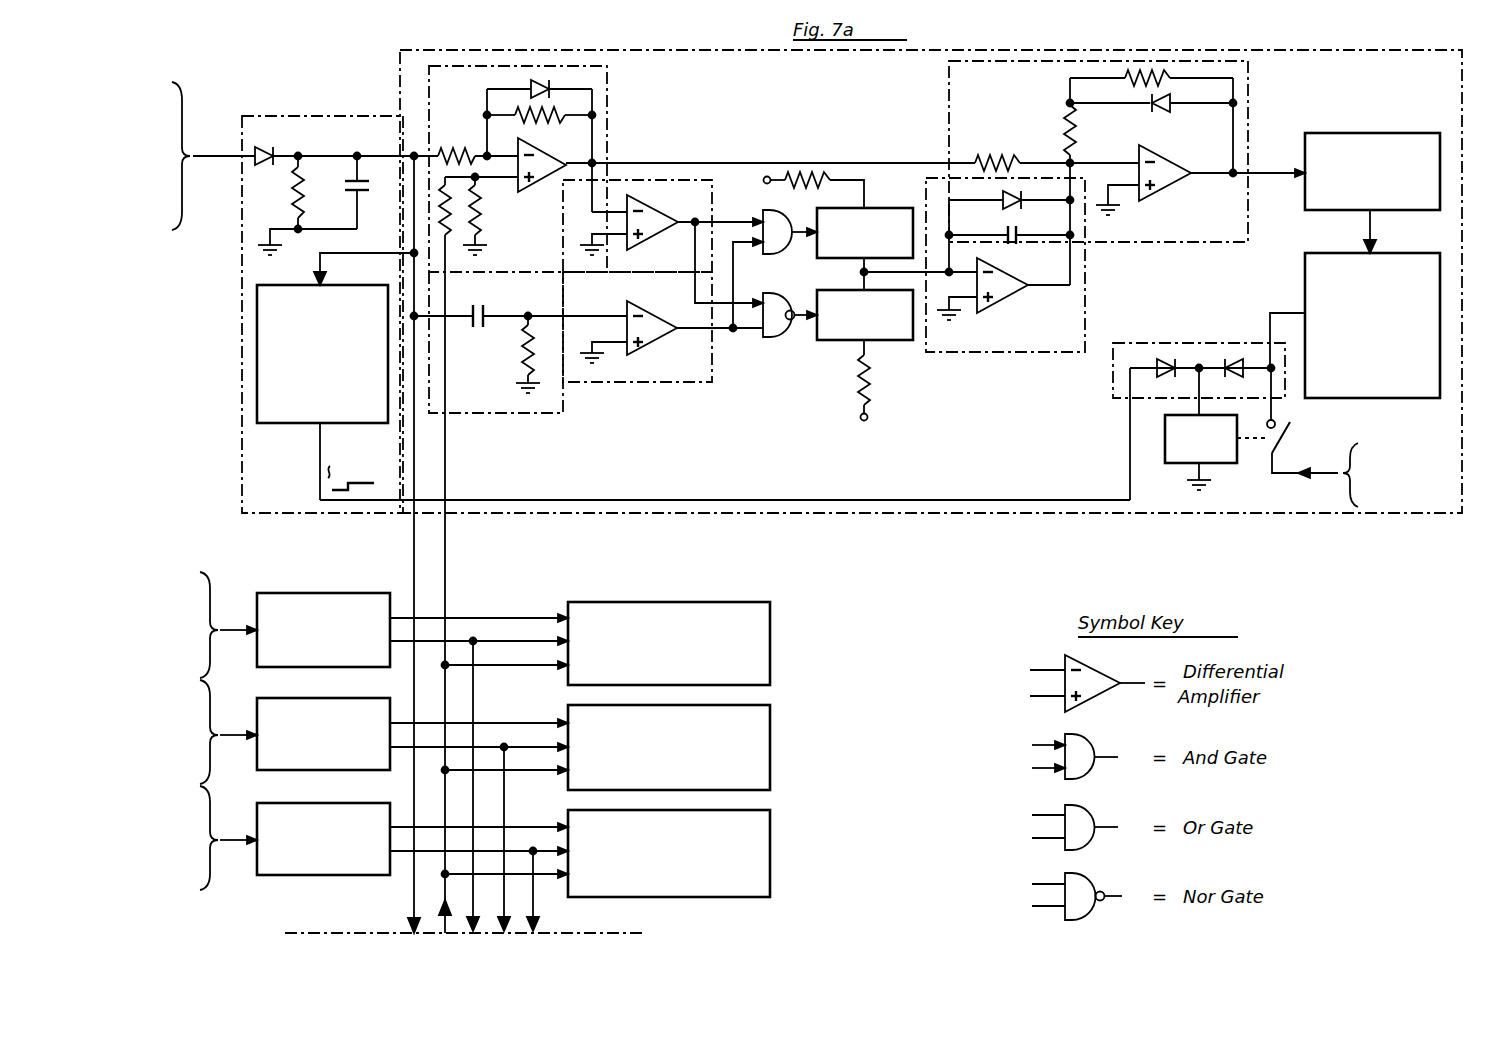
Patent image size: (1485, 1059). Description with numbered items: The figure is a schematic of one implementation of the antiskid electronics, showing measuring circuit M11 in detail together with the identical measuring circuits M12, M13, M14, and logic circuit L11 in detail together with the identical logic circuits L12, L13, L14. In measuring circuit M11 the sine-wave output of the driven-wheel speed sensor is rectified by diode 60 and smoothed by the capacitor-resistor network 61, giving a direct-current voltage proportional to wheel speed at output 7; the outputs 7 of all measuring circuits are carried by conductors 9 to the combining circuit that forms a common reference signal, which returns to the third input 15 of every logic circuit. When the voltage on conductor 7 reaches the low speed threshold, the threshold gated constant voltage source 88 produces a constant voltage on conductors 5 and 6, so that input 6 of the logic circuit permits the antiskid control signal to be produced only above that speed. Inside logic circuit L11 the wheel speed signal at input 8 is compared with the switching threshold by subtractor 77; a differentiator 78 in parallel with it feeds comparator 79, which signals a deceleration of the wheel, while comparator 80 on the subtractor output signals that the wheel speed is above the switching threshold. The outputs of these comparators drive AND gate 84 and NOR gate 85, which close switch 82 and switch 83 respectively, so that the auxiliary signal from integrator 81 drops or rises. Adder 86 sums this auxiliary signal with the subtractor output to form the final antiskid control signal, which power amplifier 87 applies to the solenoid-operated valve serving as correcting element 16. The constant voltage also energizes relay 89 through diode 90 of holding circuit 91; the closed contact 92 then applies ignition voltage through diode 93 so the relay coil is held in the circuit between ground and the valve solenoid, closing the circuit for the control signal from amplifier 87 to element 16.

The output of measuring circuit 5 is at (395, 508).
The input of logic circuit 6 is at (512, 616).
The output of measuring circuit 7 is at (410, 154).
The input of logic circuit 8 is at (504, 643).
The conductors 9 is at (502, 910).
The third input of logic circuit 15 is at (446, 522).
The correcting element 16 is at (1307, 253).
The diode 60 is at (262, 148).
The capacitor-resistor network 61 is at (290, 186).
The subtractor 77 is at (625, 90).
The differentiator 78 is at (498, 400).
The comparator 79 is at (704, 357).
The comparator 80 is at (706, 196).
The integrator 81 is at (1084, 322).
The switch 82 is at (888, 208).
The switch 83 is at (820, 345).
The AND gate 84 is at (772, 222).
The NOR gate 85 is at (772, 300).
The adder 86 is at (1192, 243).
The power amplifier 87 is at (1400, 133).
The threshold gated constant voltage source 88 is at (295, 425).
The relay 89 is at (1169, 465).
The diode 90 is at (1160, 363).
The holding circuit 91 is at (1218, 343).
The contact 92 is at (1288, 430).
The diode 93 is at (1240, 378).
The measuring circuit M11 is at (242, 386).
The measuring circuit M12 is at (312, 596).
The measuring circuit M13 is at (304, 698).
The measuring circuit M14 is at (308, 805).
The logic circuit L11 is at (673, 512).
The logic circuit L12 is at (770, 640).
The logic circuit L13 is at (770, 746).
The logic circuit L14 is at (770, 851).